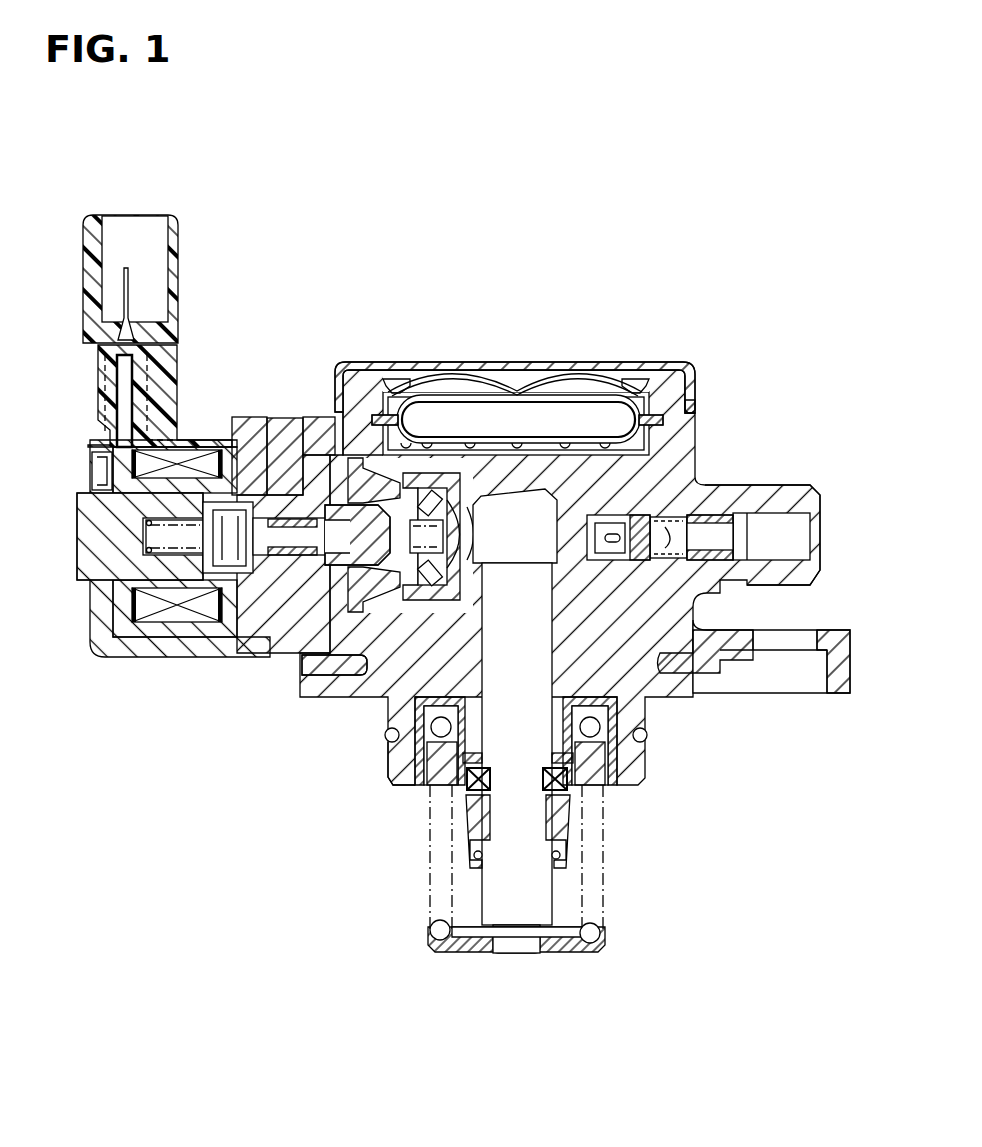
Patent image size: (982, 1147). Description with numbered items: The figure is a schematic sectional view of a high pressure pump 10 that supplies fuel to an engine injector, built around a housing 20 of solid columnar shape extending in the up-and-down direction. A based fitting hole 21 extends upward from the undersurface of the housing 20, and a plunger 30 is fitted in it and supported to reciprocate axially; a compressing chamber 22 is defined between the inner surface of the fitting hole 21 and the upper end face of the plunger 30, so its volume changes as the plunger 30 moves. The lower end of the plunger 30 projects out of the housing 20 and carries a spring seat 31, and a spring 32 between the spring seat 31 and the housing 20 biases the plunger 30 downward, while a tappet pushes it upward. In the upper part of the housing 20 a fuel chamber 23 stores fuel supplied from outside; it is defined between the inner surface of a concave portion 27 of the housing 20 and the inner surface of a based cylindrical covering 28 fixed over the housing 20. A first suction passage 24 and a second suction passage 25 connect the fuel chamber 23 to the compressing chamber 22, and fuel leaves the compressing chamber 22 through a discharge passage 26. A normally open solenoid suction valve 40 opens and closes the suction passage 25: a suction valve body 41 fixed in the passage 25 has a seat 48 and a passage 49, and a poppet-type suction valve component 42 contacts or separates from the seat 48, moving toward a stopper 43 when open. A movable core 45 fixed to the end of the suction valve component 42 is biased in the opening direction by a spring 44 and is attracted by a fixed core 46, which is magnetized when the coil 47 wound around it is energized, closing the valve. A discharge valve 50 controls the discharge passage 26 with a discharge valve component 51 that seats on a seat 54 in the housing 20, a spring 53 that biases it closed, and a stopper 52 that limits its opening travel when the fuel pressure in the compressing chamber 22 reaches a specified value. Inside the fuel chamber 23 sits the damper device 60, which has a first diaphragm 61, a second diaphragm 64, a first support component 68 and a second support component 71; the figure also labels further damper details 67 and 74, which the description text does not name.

The high pressure pump 10 is at (678, 324).
The housing 20 is at (700, 491).
The fitting hole 21 is at (565, 757).
The compressing chamber 22 is at (524, 527).
The fuel chamber 23 is at (657, 392).
The first suction passage 24 is at (328, 448).
The second suction passage 25 is at (293, 592).
The discharge passage 26 is at (768, 531).
The concave portion 27 is at (694, 414).
The covering 28 is at (682, 364).
The plunger 30 is at (552, 674).
The spring seat 31 is at (580, 945).
The spring 32 is at (600, 928).
The suction valve 40 is at (92, 645).
The suction valve body 41 is at (340, 558).
The suction valve component 42 is at (393, 545).
The stopper 43 is at (392, 783).
The spring 44 is at (157, 530).
The movable core 45 is at (240, 498).
The fixed core 46 is at (95, 538).
The coil 47 is at (105, 476).
The seat 48 is at (414, 572).
The passage 49 is at (262, 450).
The discharge valve 50 is at (662, 561).
The discharge valve component 51 is at (697, 477).
The stopper 52 is at (733, 553).
The spring 53 is at (652, 523).
The seat 54 is at (693, 680).
The damper device 60 is at (655, 400).
The first diaphragm 61 is at (540, 442).
The second diaphragm 64 is at (486, 396).
The capsule inner wall 67 is at (514, 404).
The first support component 68 is at (332, 446).
The second support component 71 is at (386, 415).
The spring plate 74 is at (453, 378).